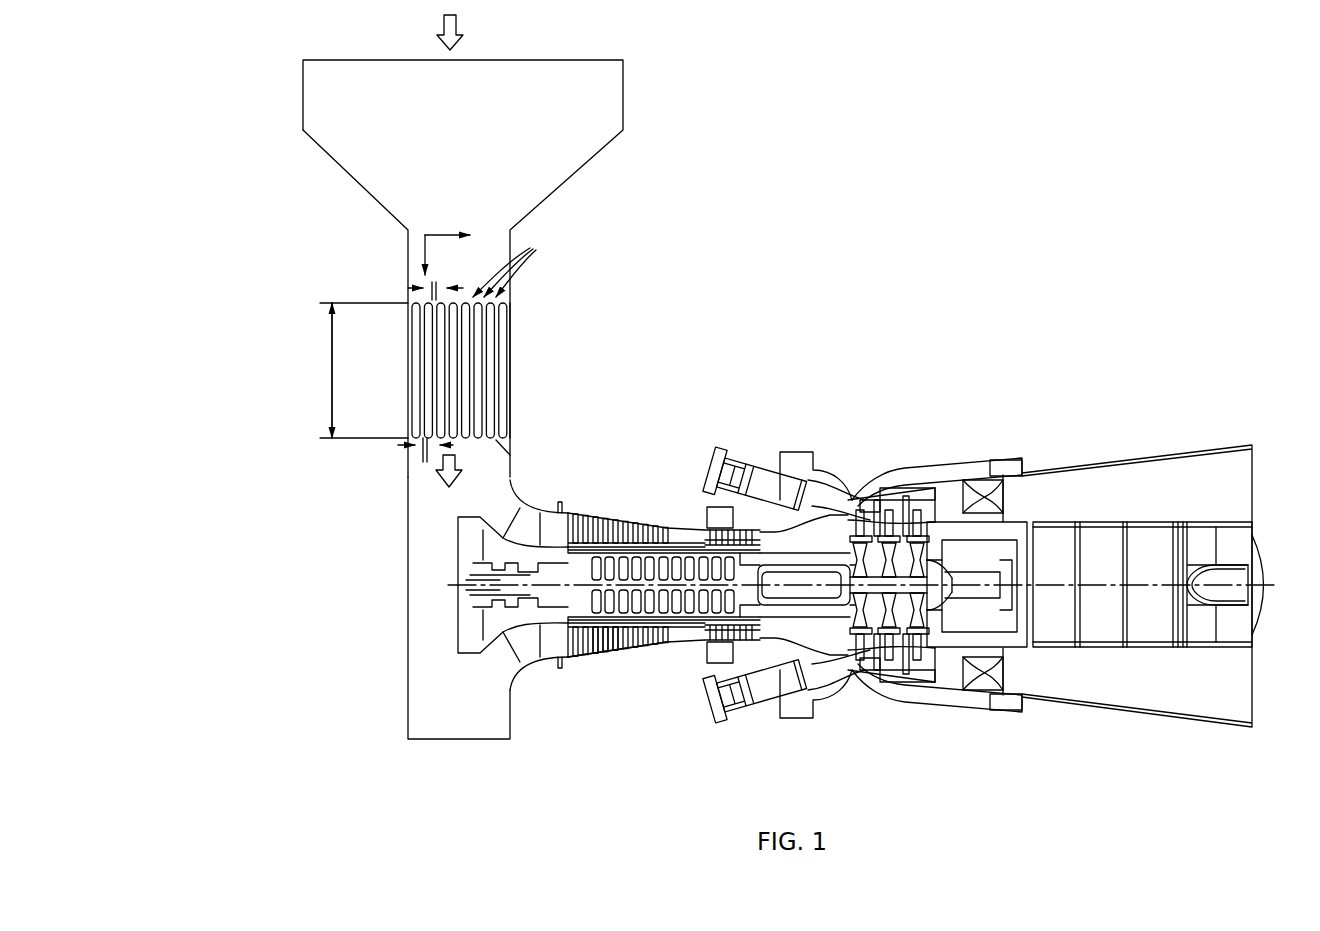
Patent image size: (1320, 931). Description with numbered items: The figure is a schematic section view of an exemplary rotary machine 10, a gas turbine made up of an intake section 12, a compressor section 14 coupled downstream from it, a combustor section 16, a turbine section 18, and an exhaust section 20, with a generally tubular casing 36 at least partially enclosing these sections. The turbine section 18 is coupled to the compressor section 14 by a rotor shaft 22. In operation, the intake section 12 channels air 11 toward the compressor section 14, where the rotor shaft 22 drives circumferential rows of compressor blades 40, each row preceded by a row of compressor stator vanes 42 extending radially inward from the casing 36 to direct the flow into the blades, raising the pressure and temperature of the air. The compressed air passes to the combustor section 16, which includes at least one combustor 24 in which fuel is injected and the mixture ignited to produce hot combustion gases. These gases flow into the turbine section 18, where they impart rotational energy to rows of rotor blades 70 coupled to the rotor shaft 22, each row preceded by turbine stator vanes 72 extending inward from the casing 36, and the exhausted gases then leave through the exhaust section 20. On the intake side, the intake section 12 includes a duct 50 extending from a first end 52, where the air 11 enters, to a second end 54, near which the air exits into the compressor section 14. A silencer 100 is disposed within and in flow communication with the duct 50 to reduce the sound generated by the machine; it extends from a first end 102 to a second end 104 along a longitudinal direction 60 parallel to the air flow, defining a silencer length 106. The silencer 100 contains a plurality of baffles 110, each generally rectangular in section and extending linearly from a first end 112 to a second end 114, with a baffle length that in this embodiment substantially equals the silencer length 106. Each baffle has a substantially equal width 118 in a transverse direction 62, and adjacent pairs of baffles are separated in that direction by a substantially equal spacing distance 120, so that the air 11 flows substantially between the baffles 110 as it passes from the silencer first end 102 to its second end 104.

The rotary machine 10 is at (861, 413).
The air 11 is at (458, 22).
The intake section 12 is at (408, 397).
The compressor section 14 is at (642, 512).
The combustor section 16 is at (731, 440).
The turbine section 18 is at (913, 422).
The exhaust section 20 is at (1128, 440).
The rotor shaft 22 is at (985, 550).
The combustor 24 is at (768, 706).
The casing 36 is at (933, 475).
The compressor blades 40 is at (610, 640).
The compressor stator vanes 42 is at (602, 642).
The duct 50 is at (577, 176).
The first end 52 is at (406, 262).
The second end 54 is at (400, 745).
The longitudinal direction 60 is at (425, 247).
The transverse direction 62 is at (443, 233).
The rotor blades 70 is at (900, 504).
The turbine stator vanes 72 is at (878, 500).
The silencer 100 is at (408, 364).
The first end 102 is at (516, 303).
The second end 104 is at (514, 433).
The length 106 is at (332, 365).
The baffles 110 is at (530, 247).
The first end 112 is at (514, 296).
The second end 114 is at (492, 444).
The width 118 is at (398, 445).
The spacing distance 120 is at (408, 288).